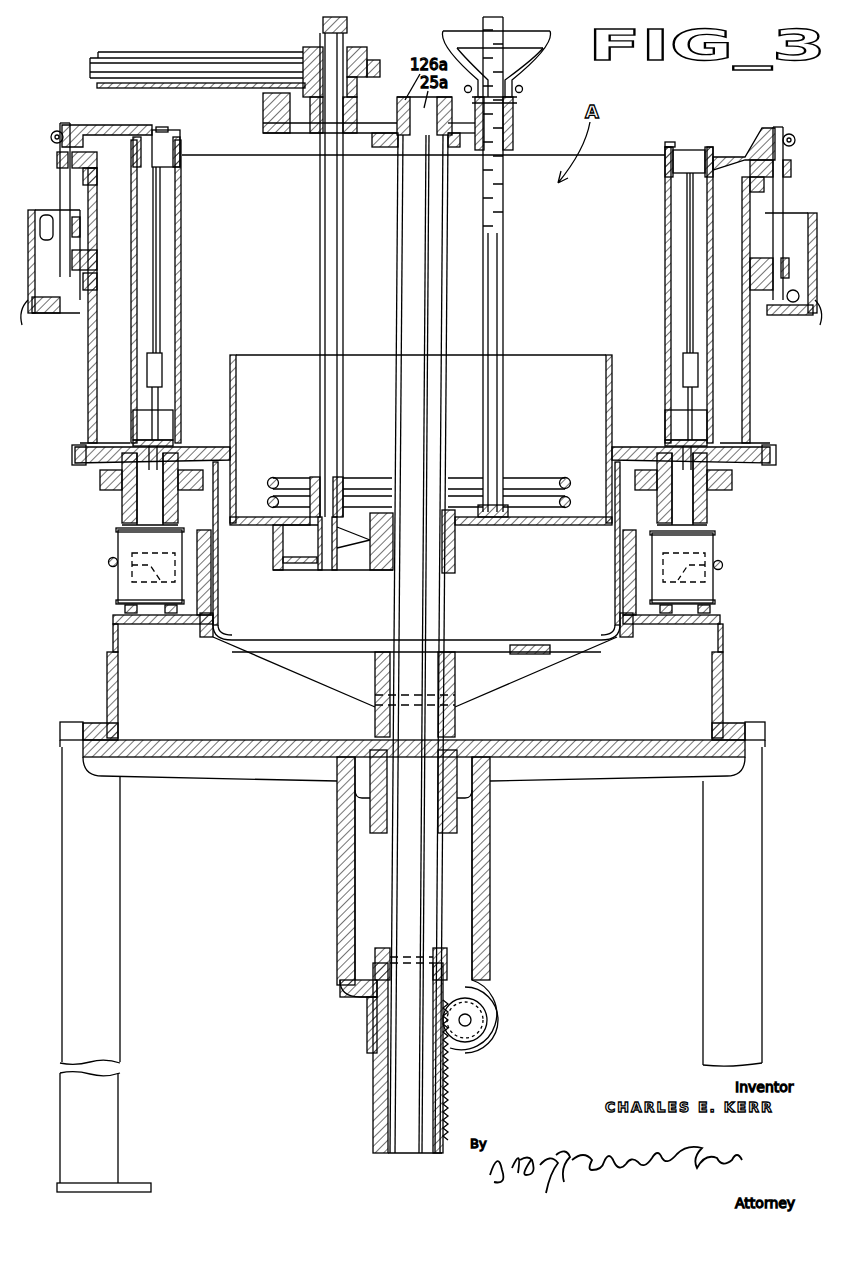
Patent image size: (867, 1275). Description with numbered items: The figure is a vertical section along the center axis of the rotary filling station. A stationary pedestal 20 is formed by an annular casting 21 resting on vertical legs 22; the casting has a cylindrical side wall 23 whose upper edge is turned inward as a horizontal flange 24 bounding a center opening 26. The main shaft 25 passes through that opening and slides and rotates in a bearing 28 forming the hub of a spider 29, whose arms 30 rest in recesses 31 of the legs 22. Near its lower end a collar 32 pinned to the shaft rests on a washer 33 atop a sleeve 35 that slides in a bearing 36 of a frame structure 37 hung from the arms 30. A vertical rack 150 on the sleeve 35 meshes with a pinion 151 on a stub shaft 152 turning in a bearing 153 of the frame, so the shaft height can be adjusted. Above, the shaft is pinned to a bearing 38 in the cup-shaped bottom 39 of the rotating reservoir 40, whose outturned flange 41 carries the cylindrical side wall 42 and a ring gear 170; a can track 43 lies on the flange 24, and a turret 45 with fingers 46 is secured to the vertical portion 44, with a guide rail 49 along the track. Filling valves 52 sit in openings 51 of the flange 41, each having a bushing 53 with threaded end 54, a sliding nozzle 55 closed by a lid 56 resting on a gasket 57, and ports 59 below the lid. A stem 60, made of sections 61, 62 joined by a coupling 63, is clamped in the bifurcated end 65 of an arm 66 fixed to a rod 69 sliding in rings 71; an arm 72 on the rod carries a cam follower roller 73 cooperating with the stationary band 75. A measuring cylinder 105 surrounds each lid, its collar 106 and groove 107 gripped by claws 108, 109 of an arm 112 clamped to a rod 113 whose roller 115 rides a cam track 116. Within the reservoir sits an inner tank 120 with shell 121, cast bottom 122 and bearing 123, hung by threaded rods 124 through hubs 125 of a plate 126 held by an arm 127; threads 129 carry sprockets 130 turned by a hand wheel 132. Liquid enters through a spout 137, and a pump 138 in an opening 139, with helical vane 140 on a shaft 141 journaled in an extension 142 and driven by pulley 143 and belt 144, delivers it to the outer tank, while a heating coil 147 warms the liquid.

The stationary pedestal 20 is at (97, 697).
The annular casting 21 is at (730, 659).
The vertical legs 22 is at (108, 870).
The cylindrical side wall 23 is at (120, 668).
The horizontal flange 24 is at (170, 625).
The main shaft 25 is at (412, 279).
The center opening 26 is at (208, 628).
The bearing 28 is at (378, 833).
The spider 29 is at (603, 737).
The arms 30 is at (130, 743).
The recesses 31 is at (95, 770).
The collar 32 is at (442, 948).
The gasket or washer 33 is at (452, 978).
The sleeve 35 is at (375, 1080).
The bearing 36 is at (368, 1022).
The frame structure 37 is at (340, 934).
The bearing 38 is at (455, 718).
The cup-shaped bottom 39 is at (296, 640).
The tank or reservoir 40 is at (262, 251).
The horizontal annular flange 41 is at (198, 455).
The cylindrical side wall 42 is at (90, 403).
The track 43 is at (123, 608).
The vertical portion 44 is at (212, 590).
The can propelling turret 45 is at (221, 574).
The propeller fingers 46 is at (118, 585).
The arcuate guide rail 49 is at (108, 563).
The circular openings 51 is at (110, 465).
The can filling valves 52 is at (122, 506).
The bushing 53 is at (122, 518).
The threaded upper end 54 is at (118, 487).
The valve nozzle 55 is at (172, 505).
The lid member 56 is at (133, 432).
The circular gasket 57 is at (133, 444).
The ports 59 is at (417, 462).
The stem 60 is at (162, 313).
The lower stem section 61 is at (160, 392).
The upper stem section 62 is at (162, 292).
The coupling 63 is at (163, 360).
The bifurcated end 65 is at (168, 128).
The arm 66 is at (115, 116).
The rod or bar 69 is at (62, 185).
The rings 71 is at (57, 160).
The arm 72 is at (82, 228).
The cam follower roller 73 is at (46, 218).
The stationary annular band 75 is at (420, 323).
The hollow cylinder 105 is at (182, 213).
The collar 106 is at (180, 151).
The annular groove 107 is at (175, 141).
The claw 108 is at (663, 155).
The claw 109 is at (720, 158).
The arm 112 is at (745, 140).
The vertical rod 113 is at (785, 193).
The cam follower roller 115 is at (790, 305).
The circular cam track 116 is at (48, 313).
The inner tank 120 is at (246, 432).
The cylindrical shell 121 is at (236, 392).
The flat bottom 122 is at (260, 522).
The bearing 123 is at (456, 552).
The vertical rods 124 is at (500, 310).
The open hubs 125 is at (512, 120).
The horizontal plate 126 is at (392, 130).
The radially extending arm 127 is at (176, 54).
The threaded portion 129 is at (505, 203).
The sprockets 130 is at (524, 90).
The hand wheel 132 is at (548, 42).
The spout 137 is at (348, 26).
The pump 138 is at (340, 532).
The opening 139 is at (365, 570).
The helical vane 140 is at (298, 557).
The vertical shaft 141 is at (320, 287).
The bracket-like extension 142 is at (312, 490).
The pulley 143 is at (305, 58).
The belt 144 is at (95, 68).
The heating coil 147 is at (530, 478).
The vertical rack 150 is at (450, 1082).
The pinion 151 is at (485, 1010).
The stub shaft 152 is at (472, 1021).
The bearing 153 is at (490, 990).
The ring gear 170 is at (72, 451).